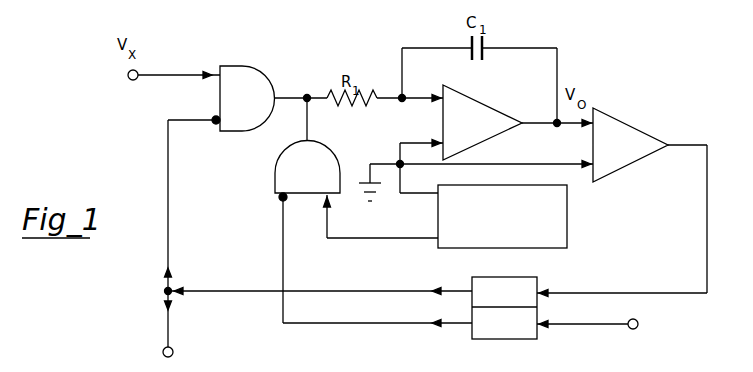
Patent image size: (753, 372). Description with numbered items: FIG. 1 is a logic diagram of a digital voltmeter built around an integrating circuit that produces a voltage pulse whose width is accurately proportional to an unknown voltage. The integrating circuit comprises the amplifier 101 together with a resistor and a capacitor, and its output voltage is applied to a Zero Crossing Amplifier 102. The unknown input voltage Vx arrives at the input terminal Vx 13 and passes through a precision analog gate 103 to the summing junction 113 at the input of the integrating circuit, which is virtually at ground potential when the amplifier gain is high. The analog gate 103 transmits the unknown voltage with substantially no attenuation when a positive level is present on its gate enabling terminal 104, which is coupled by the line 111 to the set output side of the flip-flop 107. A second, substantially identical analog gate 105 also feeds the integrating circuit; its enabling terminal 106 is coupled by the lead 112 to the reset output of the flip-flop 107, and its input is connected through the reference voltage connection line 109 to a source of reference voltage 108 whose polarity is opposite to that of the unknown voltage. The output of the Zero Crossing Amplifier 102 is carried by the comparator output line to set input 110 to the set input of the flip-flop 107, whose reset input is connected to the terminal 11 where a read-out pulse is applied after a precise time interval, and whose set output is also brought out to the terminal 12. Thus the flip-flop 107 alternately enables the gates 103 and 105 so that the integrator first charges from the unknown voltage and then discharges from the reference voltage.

The terminal 11 is at (638, 328).
The terminal 12 is at (173, 355).
The input terminal Vx 13 is at (131, 80).
The amplifier 101 is at (510, 105).
The Zero Crossing Amplifier 102 is at (660, 126).
The analog gate 103 is at (280, 64).
The gate enabling terminal 104 is at (215, 125).
The analog gate 105 is at (341, 142).
The enabling terminal 106 is at (279, 202).
The flip-flop 107 is at (525, 341).
The source of reference voltage 108 is at (567, 226).
The reference voltage connection line 109 is at (408, 239).
The comparator output line to set input 110 is at (655, 292).
The line 111 is at (232, 289).
The lead 112 is at (368, 324).
The summing junction 113 is at (415, 113).